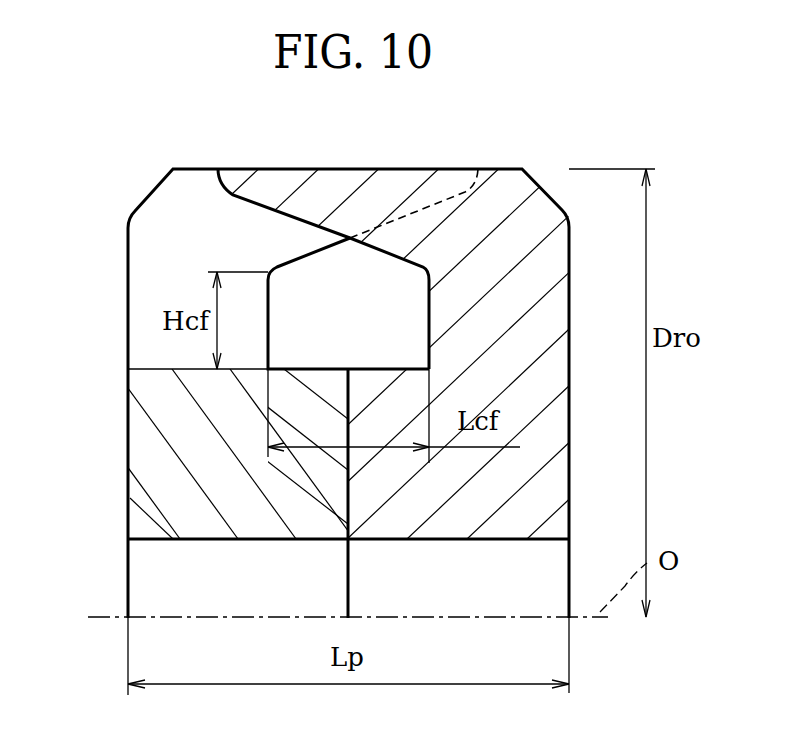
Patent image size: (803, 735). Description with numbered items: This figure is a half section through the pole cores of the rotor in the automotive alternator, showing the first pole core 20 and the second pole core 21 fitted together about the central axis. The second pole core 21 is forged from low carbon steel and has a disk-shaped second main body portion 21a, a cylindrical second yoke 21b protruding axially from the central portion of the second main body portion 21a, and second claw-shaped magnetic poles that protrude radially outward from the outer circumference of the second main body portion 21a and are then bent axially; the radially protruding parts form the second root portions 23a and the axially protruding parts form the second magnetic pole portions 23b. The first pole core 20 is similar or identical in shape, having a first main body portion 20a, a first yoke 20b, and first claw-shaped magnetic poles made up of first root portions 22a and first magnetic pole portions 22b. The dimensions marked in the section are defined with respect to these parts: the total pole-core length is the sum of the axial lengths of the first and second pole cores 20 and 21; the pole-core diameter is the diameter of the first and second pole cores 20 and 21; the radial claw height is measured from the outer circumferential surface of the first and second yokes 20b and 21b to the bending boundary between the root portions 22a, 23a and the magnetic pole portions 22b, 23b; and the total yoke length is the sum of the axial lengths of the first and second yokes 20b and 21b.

The first pole core 20 is at (457, 165).
The first main body portion 20a is at (525, 467).
The first yoke 20b is at (385, 498).
The second pole core 21 is at (160, 172).
The second main body portion 21a is at (205, 453).
The second yoke 21b is at (200, 495).
The first root portions 22a is at (527, 320).
The first magnetic pole portions 22b is at (438, 213).
The second root portions 23a is at (157, 303).
The second magnetic pole portions 23b is at (277, 230).